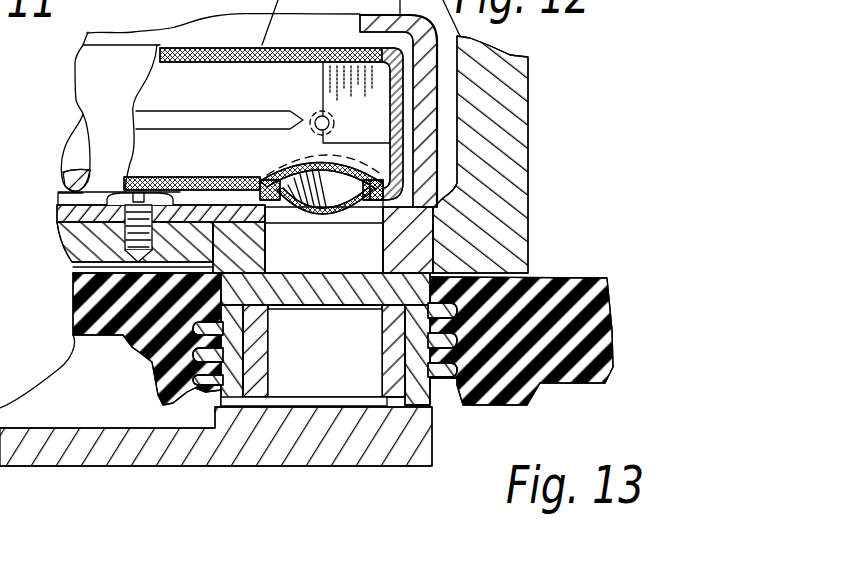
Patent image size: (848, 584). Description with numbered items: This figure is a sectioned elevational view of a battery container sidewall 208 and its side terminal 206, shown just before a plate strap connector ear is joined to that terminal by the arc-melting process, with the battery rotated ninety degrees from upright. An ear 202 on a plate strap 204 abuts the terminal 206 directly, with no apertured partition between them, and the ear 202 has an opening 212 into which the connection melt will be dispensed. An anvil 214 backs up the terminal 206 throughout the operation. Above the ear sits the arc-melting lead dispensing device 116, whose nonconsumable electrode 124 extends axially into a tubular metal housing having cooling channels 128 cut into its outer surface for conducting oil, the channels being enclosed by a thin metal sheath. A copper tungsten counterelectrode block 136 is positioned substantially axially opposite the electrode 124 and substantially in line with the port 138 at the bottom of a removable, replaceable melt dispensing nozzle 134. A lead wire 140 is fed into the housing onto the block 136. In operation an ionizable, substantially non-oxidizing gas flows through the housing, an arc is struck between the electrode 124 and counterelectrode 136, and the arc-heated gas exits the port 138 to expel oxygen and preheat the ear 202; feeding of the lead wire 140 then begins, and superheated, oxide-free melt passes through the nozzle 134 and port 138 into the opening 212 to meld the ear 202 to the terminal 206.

The arc-melting lead dispensing device 116 is at (122, 44).
The nonconsumable electrode 124 is at (212, 122).
The cooling channels 128 is at (219, 50).
The melt dispensing nozzle 134 is at (294, 170).
The copper tungsten counterelectrode block 136 is at (348, 50).
The port 138 is at (325, 222).
The lead wire 140 is at (313, 117).
The ear 202 is at (230, 196).
The plate strap 204 is at (505, 97).
The terminal 206 is at (408, 420).
The sidewall 208 is at (598, 318).
The opening 212 is at (373, 246).
The anvil 214 is at (353, 455).